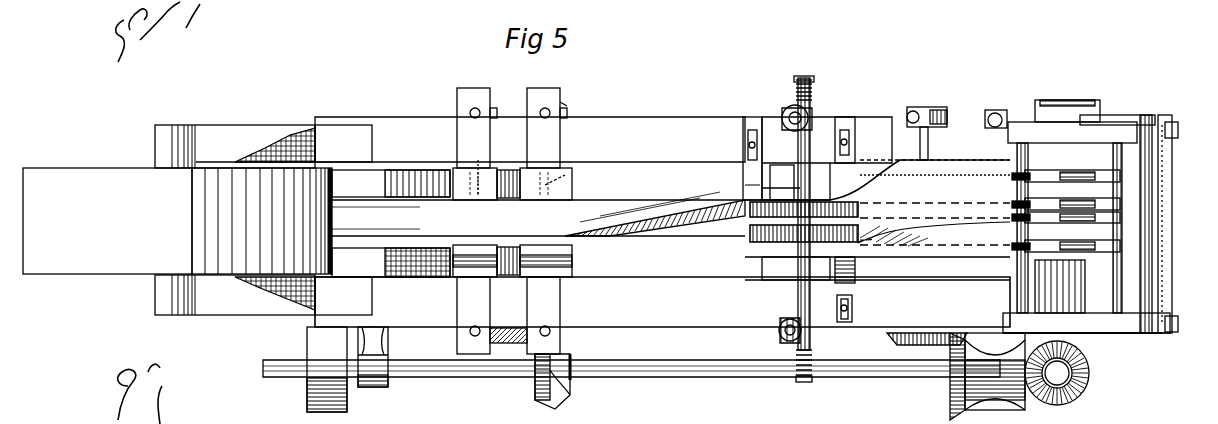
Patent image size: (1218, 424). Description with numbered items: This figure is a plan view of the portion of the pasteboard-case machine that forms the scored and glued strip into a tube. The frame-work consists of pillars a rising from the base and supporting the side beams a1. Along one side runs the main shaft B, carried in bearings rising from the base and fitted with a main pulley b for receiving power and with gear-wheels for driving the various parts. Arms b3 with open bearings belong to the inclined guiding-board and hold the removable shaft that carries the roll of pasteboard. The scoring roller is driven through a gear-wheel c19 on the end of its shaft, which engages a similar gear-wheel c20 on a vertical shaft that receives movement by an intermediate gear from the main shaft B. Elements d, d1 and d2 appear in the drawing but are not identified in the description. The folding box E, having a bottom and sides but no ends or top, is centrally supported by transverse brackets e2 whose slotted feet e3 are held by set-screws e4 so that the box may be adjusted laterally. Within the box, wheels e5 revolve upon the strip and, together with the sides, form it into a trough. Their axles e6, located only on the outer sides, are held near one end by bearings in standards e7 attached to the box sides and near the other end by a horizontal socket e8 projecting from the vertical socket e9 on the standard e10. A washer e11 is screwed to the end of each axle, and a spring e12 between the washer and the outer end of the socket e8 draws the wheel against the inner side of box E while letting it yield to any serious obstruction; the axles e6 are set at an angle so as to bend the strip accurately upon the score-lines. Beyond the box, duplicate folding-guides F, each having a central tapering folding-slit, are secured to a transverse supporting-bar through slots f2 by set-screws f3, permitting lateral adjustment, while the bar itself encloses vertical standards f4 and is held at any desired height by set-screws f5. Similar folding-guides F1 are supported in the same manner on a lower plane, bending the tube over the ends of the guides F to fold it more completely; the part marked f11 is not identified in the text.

The pillars a is at (107, 221).
The side beams a1 is at (391, 183).
The main pulley b is at (327, 369).
The main shaft B is at (426, 358).
The arms b3 is at (1178, 126).
The gear-wheel c19 is at (1090, 356).
The gear-wheel c20 is at (1070, 373).
The guide d is at (956, 165).
The bracket d1 is at (938, 108).
The roller d2 is at (913, 110).
The guiding or folding box E is at (655, 214).
The transverse bars or brackets e2 is at (746, 174).
The slotted feet e3 is at (745, 160).
The set-screws e4 is at (750, 145).
The wheels e5 is at (760, 228).
The axles or shafts e6 is at (752, 193).
The standards e7 is at (781, 182).
The horizontal socket e8 is at (812, 112).
The vertical socket e9 is at (782, 112).
The standard e10 is at (790, 112).
The washer e11 is at (812, 78).
The spring e12 is at (812, 94).
The folding-guides F is at (572, 186).
The folding-guides F1 is at (482, 222).
The slots f2 is at (590, 150).
The set-screws f3 is at (600, 158).
The vertical standards f4 is at (475, 108).
The set-screws f5 is at (494, 110).
The lug f11 is at (560, 102).